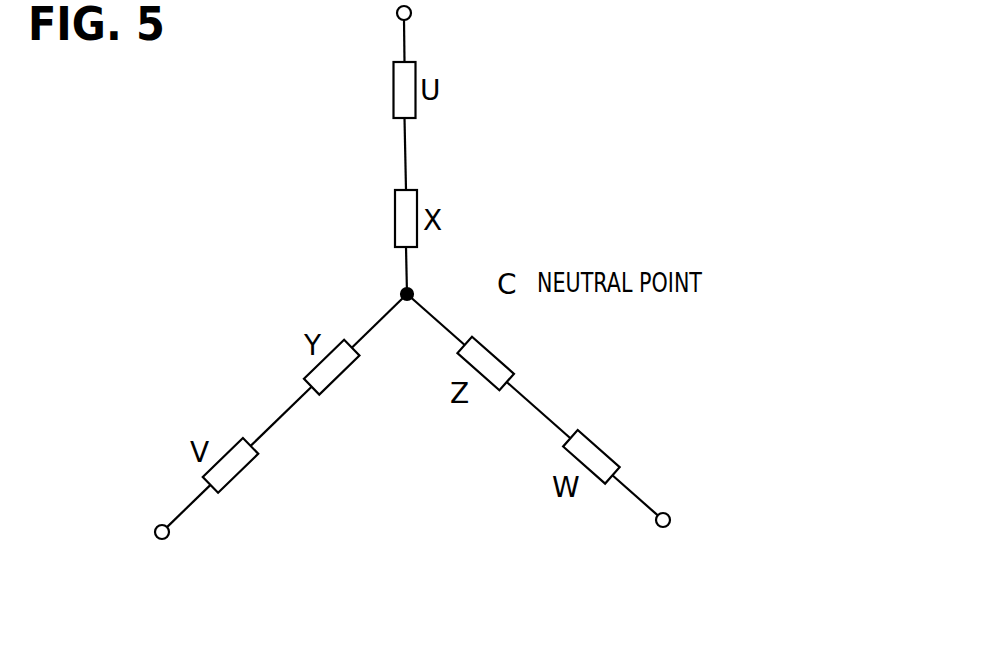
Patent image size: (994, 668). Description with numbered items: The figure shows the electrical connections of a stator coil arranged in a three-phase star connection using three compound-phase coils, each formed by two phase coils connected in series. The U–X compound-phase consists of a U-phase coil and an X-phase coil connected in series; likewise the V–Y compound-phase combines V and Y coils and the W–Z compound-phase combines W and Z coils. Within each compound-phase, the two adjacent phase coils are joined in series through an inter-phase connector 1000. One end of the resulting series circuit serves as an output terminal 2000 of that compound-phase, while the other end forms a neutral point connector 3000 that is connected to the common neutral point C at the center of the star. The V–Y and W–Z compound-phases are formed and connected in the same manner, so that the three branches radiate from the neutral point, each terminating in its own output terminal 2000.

The inter-phase connector 1000 is at (405, 158).
The output terminal 2000 is at (404, 43).
The neutral point connector 3000 is at (538, 337).